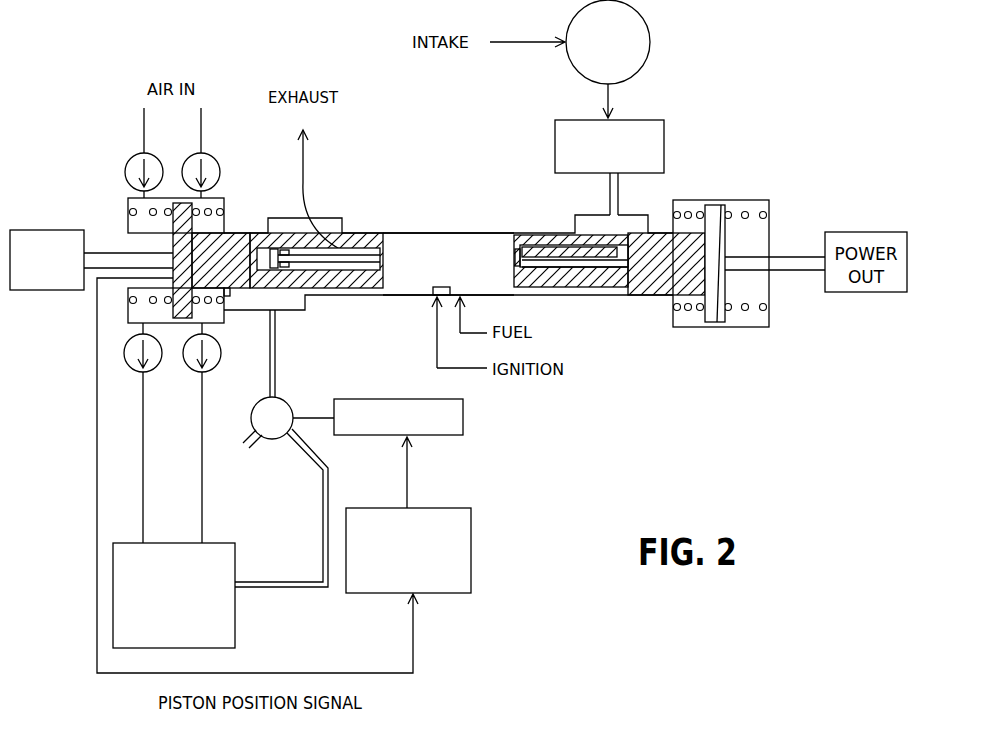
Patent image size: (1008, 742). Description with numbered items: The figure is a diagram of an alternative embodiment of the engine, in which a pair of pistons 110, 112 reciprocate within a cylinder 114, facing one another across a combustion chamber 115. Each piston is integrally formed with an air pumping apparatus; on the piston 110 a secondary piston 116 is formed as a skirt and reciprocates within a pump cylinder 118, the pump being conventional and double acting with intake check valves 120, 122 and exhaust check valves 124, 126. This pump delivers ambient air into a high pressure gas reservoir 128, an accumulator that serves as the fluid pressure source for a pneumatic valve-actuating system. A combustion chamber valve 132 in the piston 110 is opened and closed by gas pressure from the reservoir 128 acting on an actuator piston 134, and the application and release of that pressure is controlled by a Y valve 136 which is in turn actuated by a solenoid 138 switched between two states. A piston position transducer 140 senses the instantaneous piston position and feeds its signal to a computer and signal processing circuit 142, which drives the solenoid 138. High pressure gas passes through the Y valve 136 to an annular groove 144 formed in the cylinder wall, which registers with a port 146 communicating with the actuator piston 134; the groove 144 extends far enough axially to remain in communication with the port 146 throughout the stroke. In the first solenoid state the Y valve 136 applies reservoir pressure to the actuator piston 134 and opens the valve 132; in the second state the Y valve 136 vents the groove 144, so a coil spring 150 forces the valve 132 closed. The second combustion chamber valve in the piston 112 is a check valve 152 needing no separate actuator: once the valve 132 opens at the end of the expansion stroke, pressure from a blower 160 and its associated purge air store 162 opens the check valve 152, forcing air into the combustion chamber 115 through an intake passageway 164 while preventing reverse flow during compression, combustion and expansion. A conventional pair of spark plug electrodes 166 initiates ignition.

The piston 110 is at (387, 233).
The piston 112 is at (530, 242).
The cylinder 114 is at (470, 232).
The combustion chamber 115 is at (468, 258).
The secondary piston 116 is at (173, 222).
The pump cylinder 118 is at (128, 203).
The intake check valve 120 is at (127, 168).
The intake check valve 122 is at (214, 158).
The exhaust check valve 124 is at (123, 362).
The exhaust check valve 126 is at (221, 366).
The high pressure gas reservoir 128 is at (113, 607).
The combustion chamber valve 132 is at (355, 296).
The piston 134 is at (252, 247).
The Y valve 136 is at (272, 440).
The solenoid 138 is at (463, 417).
The piston position transducer 140 is at (137, 283).
The computer and signal processing circuit 142 is at (471, 548).
The annular groove 144 is at (306, 296).
The port 146 is at (250, 290).
The coil spring 150 is at (312, 250).
The check valve 152 is at (517, 268).
The blower 160 is at (628, 68).
The purge air store 162 is at (652, 163).
The intake passageway 164 is at (572, 263).
The spark plug electrodes 166 is at (442, 287).